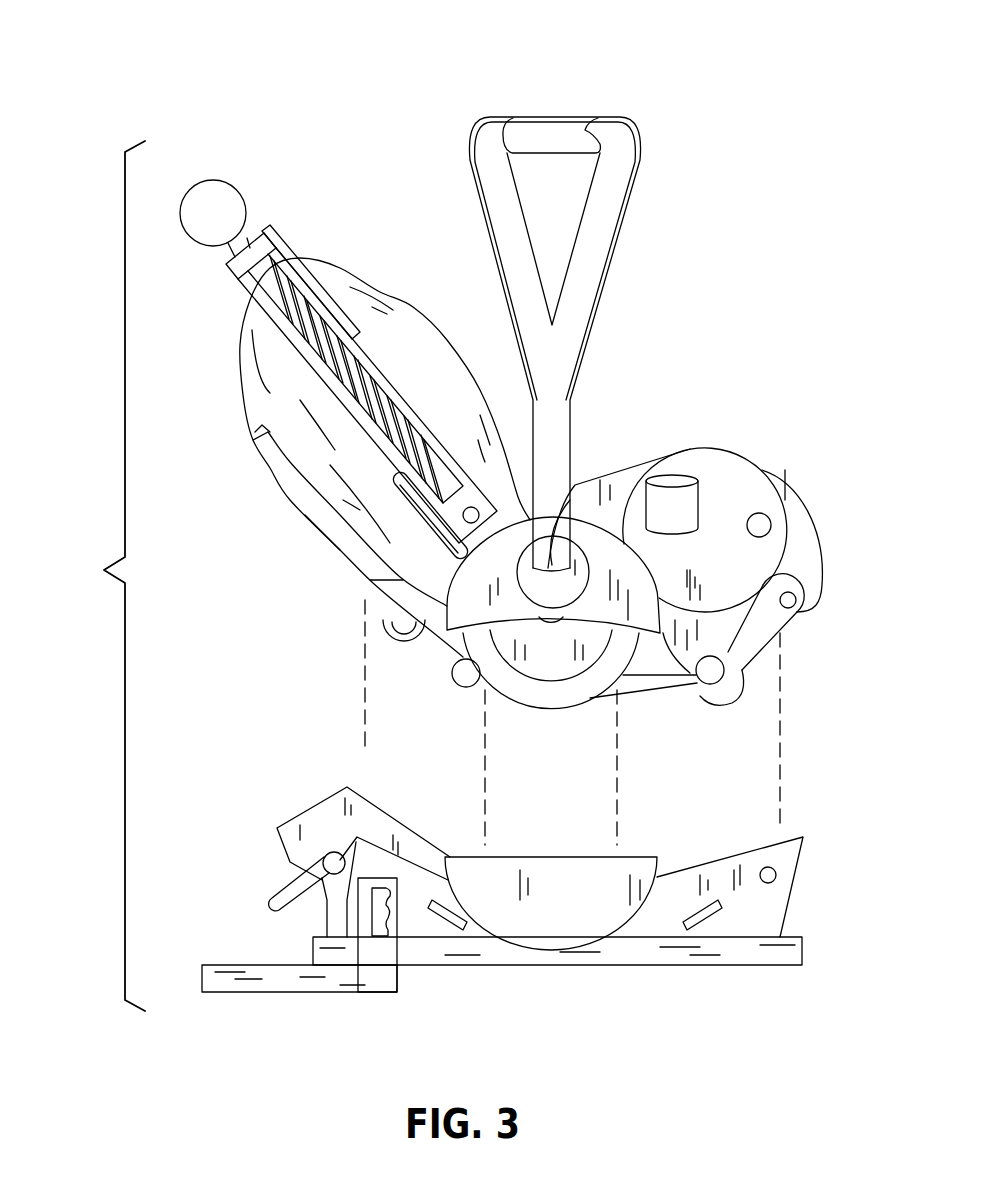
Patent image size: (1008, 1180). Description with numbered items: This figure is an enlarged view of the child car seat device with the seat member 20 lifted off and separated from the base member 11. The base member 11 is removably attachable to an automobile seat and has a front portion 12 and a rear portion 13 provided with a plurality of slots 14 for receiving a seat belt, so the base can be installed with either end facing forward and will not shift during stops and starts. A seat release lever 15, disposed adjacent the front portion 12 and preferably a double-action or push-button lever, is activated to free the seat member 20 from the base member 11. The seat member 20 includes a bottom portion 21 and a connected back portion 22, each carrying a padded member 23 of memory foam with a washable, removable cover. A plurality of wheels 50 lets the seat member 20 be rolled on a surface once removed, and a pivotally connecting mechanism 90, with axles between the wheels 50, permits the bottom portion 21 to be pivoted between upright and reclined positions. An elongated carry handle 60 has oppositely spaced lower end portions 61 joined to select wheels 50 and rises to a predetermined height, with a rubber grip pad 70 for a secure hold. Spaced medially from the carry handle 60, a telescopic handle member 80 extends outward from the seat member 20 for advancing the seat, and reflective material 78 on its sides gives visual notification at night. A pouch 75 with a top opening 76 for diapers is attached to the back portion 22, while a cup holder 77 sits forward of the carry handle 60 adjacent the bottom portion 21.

The base member 11 is at (417, 967).
The front portion 12 is at (783, 927).
The rear portion 13 is at (300, 810).
The slots 14 is at (453, 930).
The seat release lever 15 is at (275, 902).
The seat member 20 is at (117, 490).
The bottom portion 21 is at (817, 542).
The back portion 22 is at (248, 383).
The padded members 23 is at (378, 283).
The wheels 50 is at (557, 713).
The carry handle 60 is at (614, 117).
The lower end portions 61 is at (552, 565).
The grip pad 70 is at (552, 117).
The pouch 75 is at (330, 548).
The top opening 76 is at (258, 435).
The cup holder 77 is at (672, 495).
The reflective material 78 is at (245, 285).
The telescopic handle member 80 is at (233, 180).
The pivotally connecting mechanism 90 is at (373, 953).